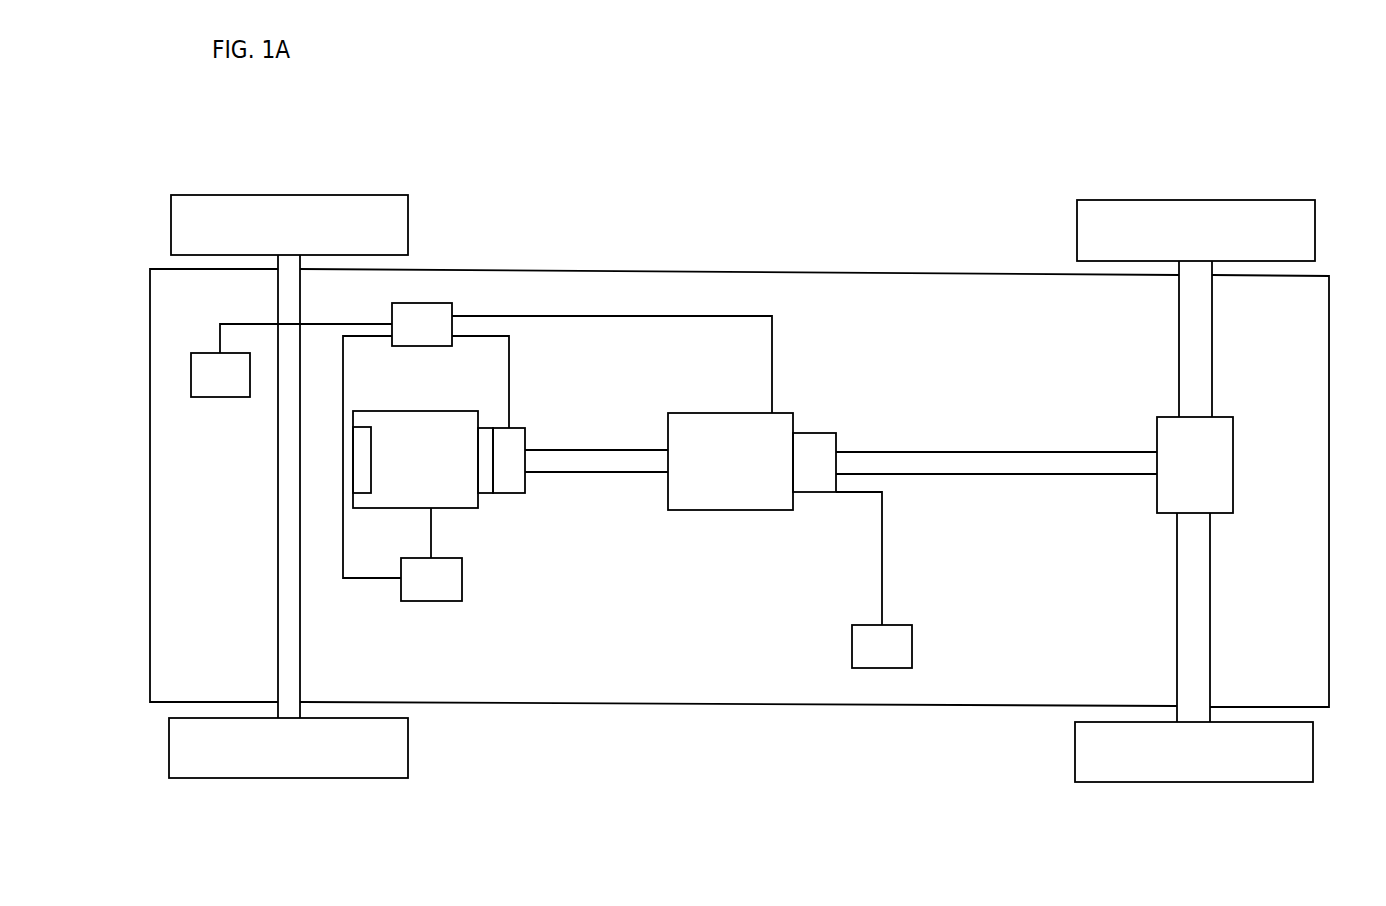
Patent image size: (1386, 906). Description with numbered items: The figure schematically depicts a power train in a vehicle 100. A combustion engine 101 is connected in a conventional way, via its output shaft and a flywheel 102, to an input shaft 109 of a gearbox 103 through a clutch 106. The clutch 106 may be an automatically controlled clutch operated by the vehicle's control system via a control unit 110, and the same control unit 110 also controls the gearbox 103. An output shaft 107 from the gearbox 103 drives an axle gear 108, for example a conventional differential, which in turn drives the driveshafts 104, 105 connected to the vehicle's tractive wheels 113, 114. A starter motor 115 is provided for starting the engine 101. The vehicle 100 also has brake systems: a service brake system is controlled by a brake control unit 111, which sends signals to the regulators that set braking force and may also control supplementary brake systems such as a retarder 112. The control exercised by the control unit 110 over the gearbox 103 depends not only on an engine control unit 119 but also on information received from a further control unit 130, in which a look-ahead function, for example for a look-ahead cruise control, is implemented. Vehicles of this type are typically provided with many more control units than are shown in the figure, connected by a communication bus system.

The vehicle 100 is at (640, 98).
The combustion engine 101 is at (373, 497).
The flywheel 102 is at (483, 432).
The gearbox 103 is at (733, 425).
The driveshaft 104 is at (1200, 335).
The driveshaft 105 is at (1204, 627).
The clutch 106 is at (516, 498).
The output shaft 107 is at (1072, 468).
The axle gear 108 is at (1228, 461).
The input shaft 109 is at (640, 466).
The control unit 110 is at (496, 358).
The brake control unit 111 is at (874, 580).
The retarder 112 is at (815, 489).
The tractive wheel 113 is at (1310, 224).
The tractive wheel 114 is at (1306, 757).
The starter motor 115 is at (365, 443).
The engine control unit 119 is at (431, 554).
The control unit 130 is at (220, 375).